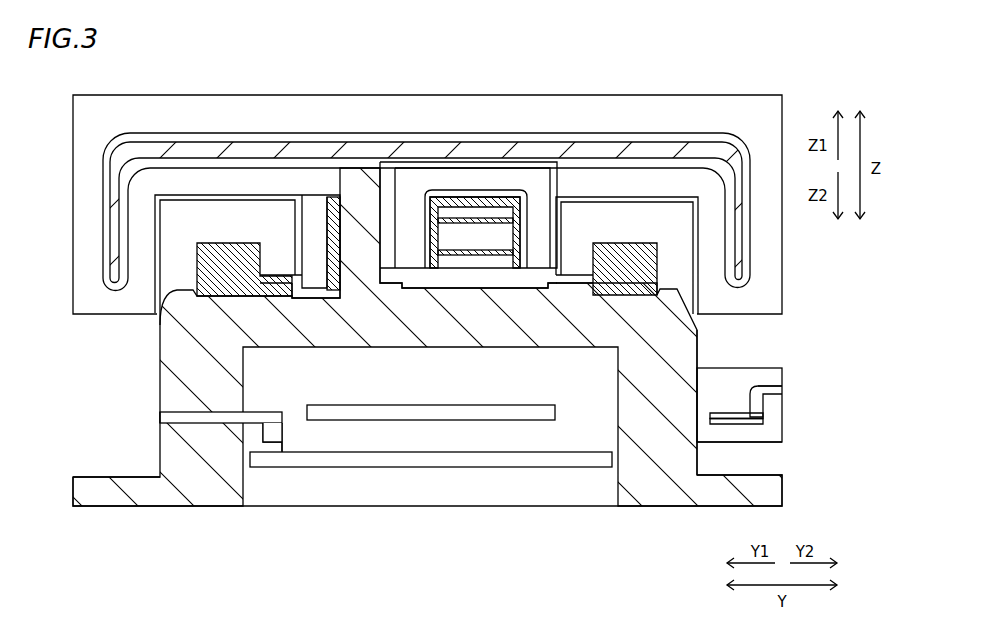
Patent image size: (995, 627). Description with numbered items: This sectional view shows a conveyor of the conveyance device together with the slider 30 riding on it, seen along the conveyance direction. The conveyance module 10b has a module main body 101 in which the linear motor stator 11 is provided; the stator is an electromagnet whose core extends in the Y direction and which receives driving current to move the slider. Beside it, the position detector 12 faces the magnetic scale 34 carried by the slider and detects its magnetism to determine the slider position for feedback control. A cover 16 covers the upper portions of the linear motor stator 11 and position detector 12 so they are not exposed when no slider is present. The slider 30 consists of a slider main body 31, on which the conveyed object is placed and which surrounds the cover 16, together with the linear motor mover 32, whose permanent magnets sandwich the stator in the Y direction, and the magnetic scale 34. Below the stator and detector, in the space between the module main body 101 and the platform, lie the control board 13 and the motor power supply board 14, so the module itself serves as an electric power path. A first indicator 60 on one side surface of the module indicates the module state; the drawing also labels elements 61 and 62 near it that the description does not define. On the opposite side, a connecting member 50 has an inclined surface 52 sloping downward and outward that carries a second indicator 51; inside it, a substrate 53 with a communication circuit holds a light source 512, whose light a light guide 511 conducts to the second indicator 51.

The slider 30 is at (708, 70).
The slider main body 31 is at (506, 142).
The linear motor mover 32 is at (442, 162).
The magnetic scale 34 is at (322, 197).
The linear motor stator 11 is at (500, 228).
The position detector 12 is at (348, 188).
The cover 16 is at (103, 175).
The conveyance module 10b is at (705, 342).
The connecting member 50 is at (742, 368).
The second indicators 51 is at (768, 385).
The inclined surface 52 is at (765, 388).
The light guide 511 is at (765, 415).
The light source 512 is at (765, 422).
The substrate 53 is at (785, 445).
The module main body 101 is at (697, 460).
The motor power supply board 14 is at (528, 404).
The control board 13 is at (570, 451).
The wiring layer 61 is at (185, 410).
The first indicators 60 is at (158, 416).
The via conductor 62 is at (284, 450).